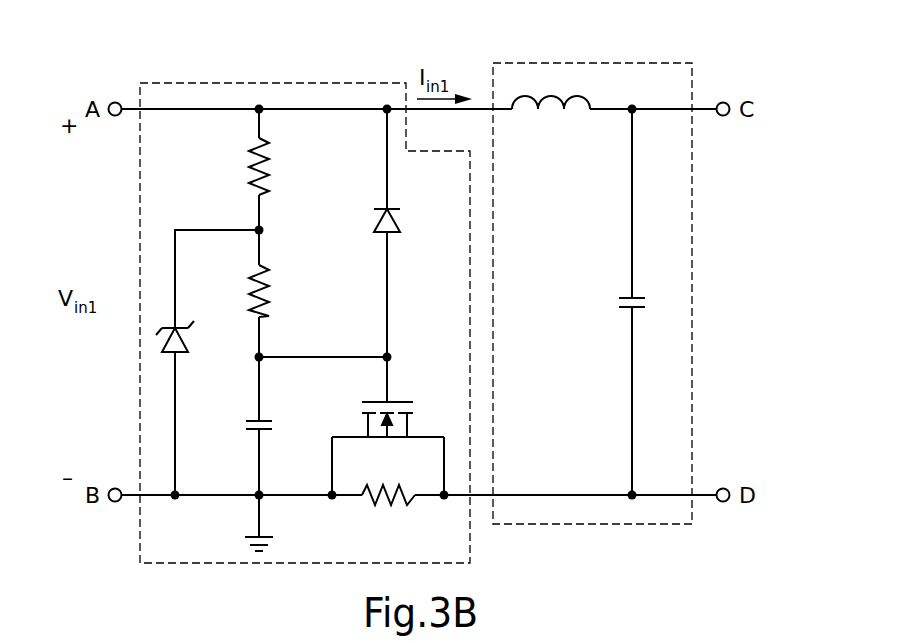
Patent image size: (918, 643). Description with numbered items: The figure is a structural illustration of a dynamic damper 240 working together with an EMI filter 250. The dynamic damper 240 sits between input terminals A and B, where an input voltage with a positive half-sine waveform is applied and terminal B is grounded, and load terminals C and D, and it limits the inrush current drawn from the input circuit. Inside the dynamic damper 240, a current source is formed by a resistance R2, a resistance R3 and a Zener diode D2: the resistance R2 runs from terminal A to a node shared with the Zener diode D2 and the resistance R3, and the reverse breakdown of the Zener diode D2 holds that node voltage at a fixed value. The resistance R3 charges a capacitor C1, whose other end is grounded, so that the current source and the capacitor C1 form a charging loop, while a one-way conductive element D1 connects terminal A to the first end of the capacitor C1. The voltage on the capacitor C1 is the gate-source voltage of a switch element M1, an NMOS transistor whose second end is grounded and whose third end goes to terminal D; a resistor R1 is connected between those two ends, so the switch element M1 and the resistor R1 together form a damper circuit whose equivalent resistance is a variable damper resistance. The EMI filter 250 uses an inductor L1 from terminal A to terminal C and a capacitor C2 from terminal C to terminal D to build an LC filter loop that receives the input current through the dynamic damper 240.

The dynamic damper 240 is at (272, 83).
The EMI filter 250 is at (600, 62).
The resistor R1 is at (388, 508).
The resistance R2 is at (273, 166).
The resistance R3 is at (273, 291).
The capacitor C1 is at (242, 425).
The capacitor C2 is at (650, 302).
The one-way conductive element D1 is at (405, 220).
The Zener diode D2 is at (190, 338).
The inductor L1 is at (551, 89).
The switch element M1 is at (400, 393).